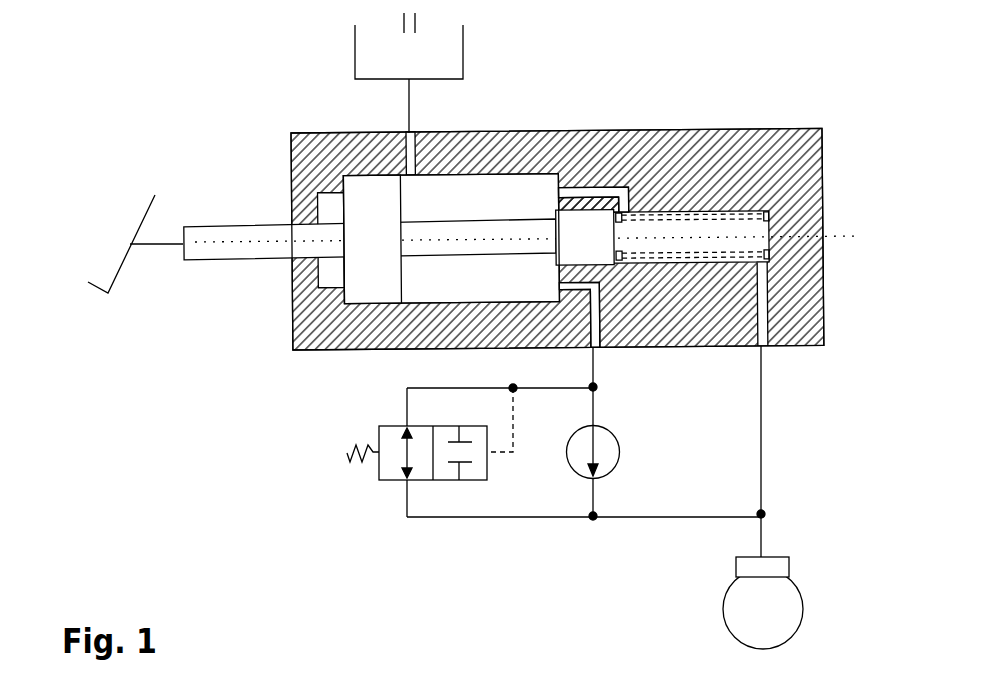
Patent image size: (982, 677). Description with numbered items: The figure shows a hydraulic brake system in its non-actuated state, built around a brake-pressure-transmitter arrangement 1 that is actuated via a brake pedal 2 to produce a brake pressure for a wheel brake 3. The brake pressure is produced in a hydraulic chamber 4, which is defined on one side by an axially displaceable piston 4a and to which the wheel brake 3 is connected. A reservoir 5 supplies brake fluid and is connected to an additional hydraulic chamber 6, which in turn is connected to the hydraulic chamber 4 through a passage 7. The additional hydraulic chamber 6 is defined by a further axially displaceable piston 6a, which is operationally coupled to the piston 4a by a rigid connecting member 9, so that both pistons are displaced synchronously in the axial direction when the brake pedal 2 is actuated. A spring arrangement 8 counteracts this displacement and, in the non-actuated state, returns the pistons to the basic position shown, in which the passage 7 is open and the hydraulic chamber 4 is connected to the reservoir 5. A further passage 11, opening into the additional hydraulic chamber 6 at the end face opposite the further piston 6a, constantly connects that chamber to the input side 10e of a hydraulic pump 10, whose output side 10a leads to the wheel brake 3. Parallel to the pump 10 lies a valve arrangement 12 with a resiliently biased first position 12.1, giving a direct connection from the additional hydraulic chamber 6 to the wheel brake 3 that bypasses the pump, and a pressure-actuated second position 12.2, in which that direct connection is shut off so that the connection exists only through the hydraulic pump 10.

The brake-pressure-transmitter arrangement 1 is at (812, 85).
The brake pedal 2 is at (130, 242).
The wheel brake 3 is at (777, 567).
The hydraulic chamber 4 is at (670, 247).
The piston 4a is at (581, 218).
The reservoir 5 is at (404, 68).
The additional hydraulic chamber 6 is at (475, 205).
The further piston 6a is at (377, 197).
The passage 7 is at (618, 192).
The spring arrangement 8 is at (710, 150).
The rigid connecting member 9 is at (490, 233).
The hydraulic pump 10 is at (595, 450).
The output side 10a is at (595, 488).
The input side 10e is at (595, 415).
The further passage 11 is at (593, 318).
The valve arrangement 12 is at (378, 425).
The first position 12.1 is at (388, 470).
The second position 12.2 is at (477, 468).